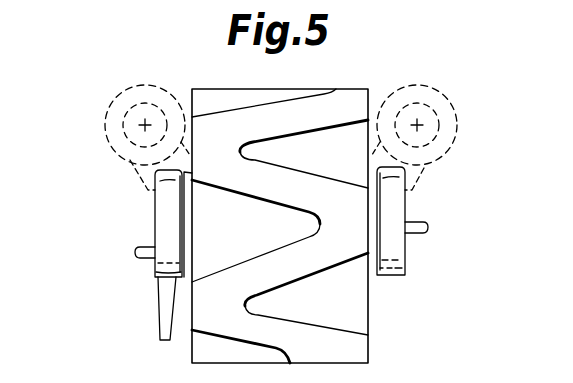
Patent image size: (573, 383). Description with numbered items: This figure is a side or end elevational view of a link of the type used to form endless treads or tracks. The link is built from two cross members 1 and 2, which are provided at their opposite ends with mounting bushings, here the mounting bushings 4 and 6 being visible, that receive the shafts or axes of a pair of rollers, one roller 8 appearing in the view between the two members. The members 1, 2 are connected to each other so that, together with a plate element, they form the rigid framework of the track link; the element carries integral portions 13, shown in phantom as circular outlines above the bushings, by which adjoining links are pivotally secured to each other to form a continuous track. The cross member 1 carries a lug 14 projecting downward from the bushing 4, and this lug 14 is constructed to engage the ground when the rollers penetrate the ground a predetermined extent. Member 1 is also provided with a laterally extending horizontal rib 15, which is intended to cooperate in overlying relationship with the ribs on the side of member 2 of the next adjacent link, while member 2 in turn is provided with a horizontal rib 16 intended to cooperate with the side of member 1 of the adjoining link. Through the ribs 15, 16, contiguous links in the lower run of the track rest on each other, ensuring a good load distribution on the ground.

The member 1 is at (150, 275).
The member 2 is at (412, 207).
The mounting bushing 4 is at (165, 211).
The mounting bushing 6 is at (403, 268).
The roller 8 is at (345, 340).
The integral portion 13 is at (108, 116).
The lug 14 is at (162, 312).
The horizontal rib 15 is at (135, 253).
The horizontal rib 16 is at (428, 231).